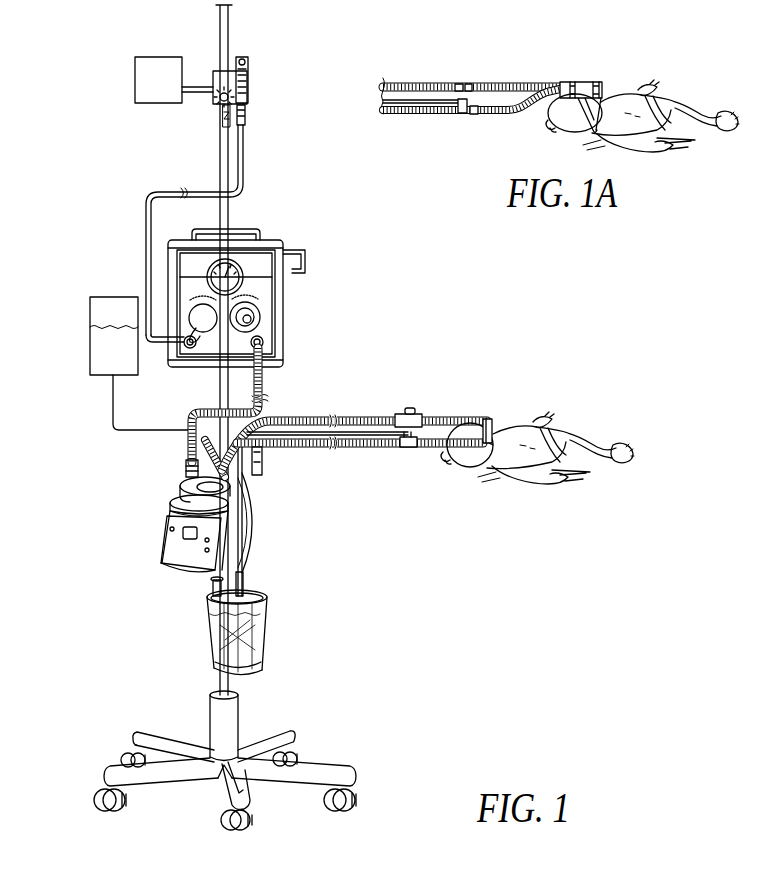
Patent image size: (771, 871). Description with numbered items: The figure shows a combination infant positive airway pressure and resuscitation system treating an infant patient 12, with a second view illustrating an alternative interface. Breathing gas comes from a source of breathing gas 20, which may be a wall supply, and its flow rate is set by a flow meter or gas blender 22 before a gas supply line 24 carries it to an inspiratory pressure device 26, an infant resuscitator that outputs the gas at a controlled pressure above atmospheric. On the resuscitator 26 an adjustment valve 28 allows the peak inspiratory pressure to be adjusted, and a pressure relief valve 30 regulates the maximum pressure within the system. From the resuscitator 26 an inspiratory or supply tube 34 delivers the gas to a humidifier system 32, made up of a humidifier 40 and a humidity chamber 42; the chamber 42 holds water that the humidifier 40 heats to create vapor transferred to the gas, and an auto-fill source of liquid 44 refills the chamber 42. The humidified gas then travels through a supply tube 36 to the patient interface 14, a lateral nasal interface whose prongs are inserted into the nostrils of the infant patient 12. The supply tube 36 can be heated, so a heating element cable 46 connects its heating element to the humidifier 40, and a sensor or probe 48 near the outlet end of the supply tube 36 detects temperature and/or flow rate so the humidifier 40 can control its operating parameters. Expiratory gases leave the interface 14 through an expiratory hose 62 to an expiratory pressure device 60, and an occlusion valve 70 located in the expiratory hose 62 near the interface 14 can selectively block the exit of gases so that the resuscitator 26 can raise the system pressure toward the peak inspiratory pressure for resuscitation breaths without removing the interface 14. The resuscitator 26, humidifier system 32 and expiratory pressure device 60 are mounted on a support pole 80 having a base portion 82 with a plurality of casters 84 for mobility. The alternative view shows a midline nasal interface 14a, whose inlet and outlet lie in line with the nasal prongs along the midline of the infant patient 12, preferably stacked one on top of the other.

In FIG. 1, the infant patient 12 is at (521, 508).
In FIG. 1, the patient interface 14 is at (488, 423).
In FIG. 1A, the midline nasal interface 14a is at (578, 80).
In FIG. 1, the source of breathing gas 20 is at (135, 80).
In FIG. 1, the flow meter or gas blender 22 is at (247, 81).
In FIG. 1, the gas supply line 24 is at (243, 152).
In FIG. 1, the inspiratory pressure device 26 is at (298, 292).
In FIG. 1, the adjustment valve 28 is at (252, 316).
In FIG. 1, the pressure relief valve 30 is at (200, 313).
In FIG. 1, the humidifier system 32 is at (118, 541).
In FIG. 1, the inspiratory tube or supply tube 34 is at (280, 400).
In FIG. 1, the supply tube 36 is at (363, 447).
In FIG. 1A, the supply tube 36 is at (410, 113).
In FIG. 1, the humidifier 40 is at (180, 575).
In FIG. 1, the humidity chamber 42 is at (185, 480).
In FIG. 1, the source of liquid 44 is at (90, 342).
In FIG. 1, the heating element cable 46 is at (250, 513).
In FIG. 1, the sensor or probe 48 is at (420, 440).
In FIG. 1, the expiratory pressure device 60 is at (279, 632).
In FIG. 1, the expiratory hose 62 is at (352, 415).
In FIG. 1A, the expiratory hose 62 is at (417, 82).
In FIG. 1, the occlusion valve 70 is at (408, 403).
In FIG. 1, the support pole 80 is at (217, 685).
In FIG. 1, the base portion 82 is at (288, 735).
In FIG. 1, the casters 84 is at (360, 797).